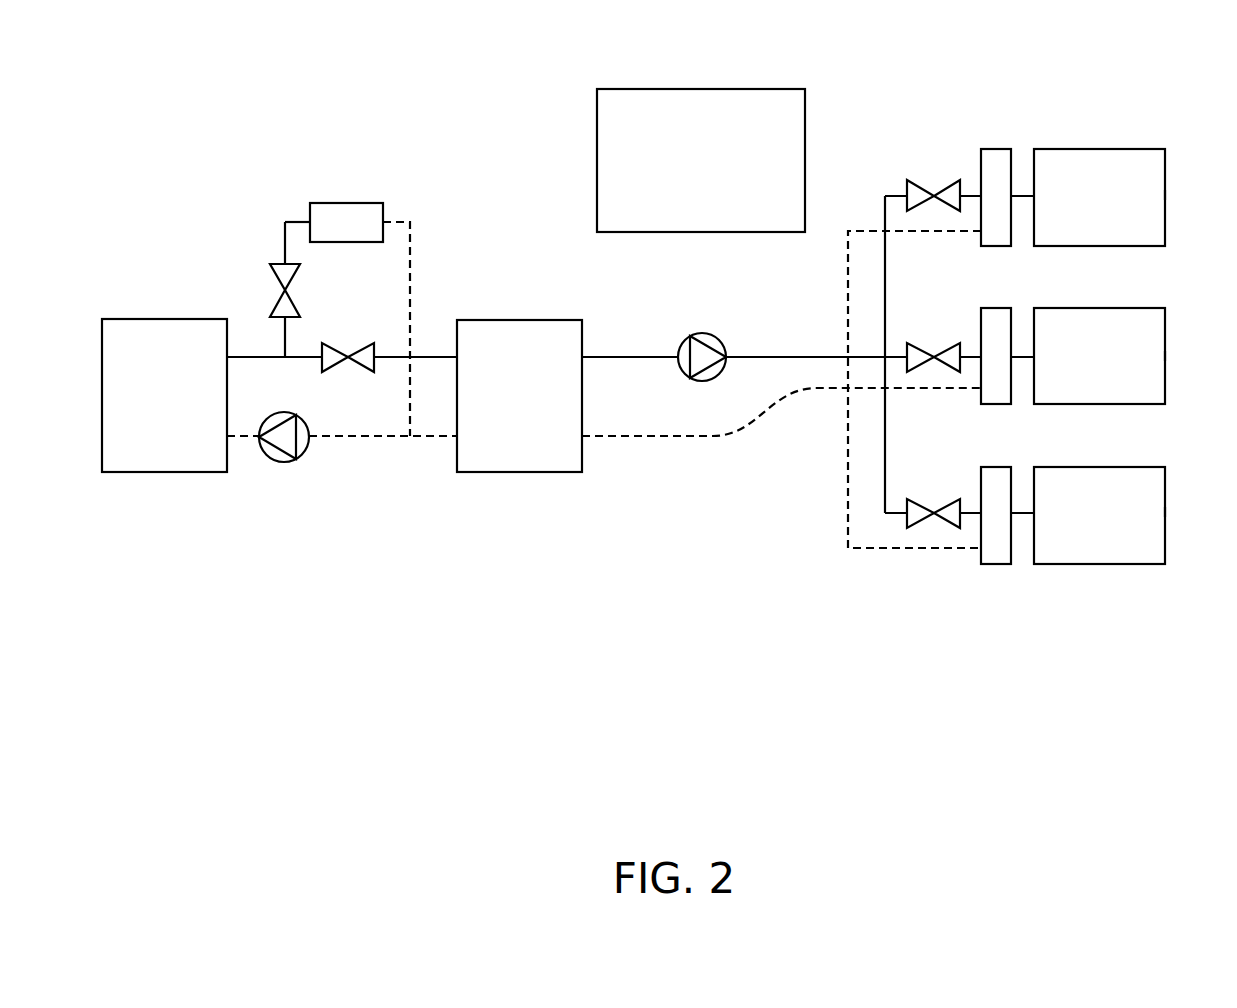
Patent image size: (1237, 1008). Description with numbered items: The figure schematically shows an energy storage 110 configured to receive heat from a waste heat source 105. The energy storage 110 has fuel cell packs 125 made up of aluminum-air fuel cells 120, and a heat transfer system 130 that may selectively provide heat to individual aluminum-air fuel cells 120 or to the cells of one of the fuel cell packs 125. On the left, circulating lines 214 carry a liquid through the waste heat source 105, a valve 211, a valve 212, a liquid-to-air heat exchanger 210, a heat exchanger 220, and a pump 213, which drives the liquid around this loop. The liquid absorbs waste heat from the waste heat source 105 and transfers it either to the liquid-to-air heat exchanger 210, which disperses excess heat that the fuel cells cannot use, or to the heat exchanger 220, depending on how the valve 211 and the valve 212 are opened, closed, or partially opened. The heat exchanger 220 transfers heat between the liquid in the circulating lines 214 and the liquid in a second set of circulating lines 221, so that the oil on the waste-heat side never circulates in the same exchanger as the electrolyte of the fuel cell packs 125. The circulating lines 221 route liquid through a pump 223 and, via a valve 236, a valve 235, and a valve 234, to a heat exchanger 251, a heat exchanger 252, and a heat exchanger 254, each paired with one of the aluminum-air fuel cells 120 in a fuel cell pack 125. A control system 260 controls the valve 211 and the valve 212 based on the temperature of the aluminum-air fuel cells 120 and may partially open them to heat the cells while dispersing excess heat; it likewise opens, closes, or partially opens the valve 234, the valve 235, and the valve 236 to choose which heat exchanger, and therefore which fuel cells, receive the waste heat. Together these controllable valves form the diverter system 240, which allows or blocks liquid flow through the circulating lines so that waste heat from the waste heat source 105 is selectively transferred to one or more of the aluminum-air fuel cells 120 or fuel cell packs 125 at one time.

The waste heat source 105 is at (132, 318).
The energy storage 110 is at (515, 565).
The aluminum-air fuel cells 120 is at (1124, 163).
The fuel cell packs 125 is at (1165, 193).
The heat transfer system 130 is at (406, 541).
The liquid-to-air heat exchanger 210 is at (337, 202).
The valve 211 is at (292, 296).
The valve 212 is at (345, 373).
The pump 213 is at (305, 456).
The circulating lines 214 is at (413, 441).
The heat exchanger 220 is at (481, 319).
The circulating lines 221 is at (713, 440).
The pump 223 is at (718, 332).
The valve 234 is at (926, 499).
The valve 235 is at (926, 343).
The valve 236 is at (926, 180).
The diverter system 240 is at (950, 100).
The heat exchanger 251 is at (984, 247).
The heat exchanger 252 is at (984, 405).
The heat exchanger 254 is at (984, 565).
The control system 260 is at (627, 88).